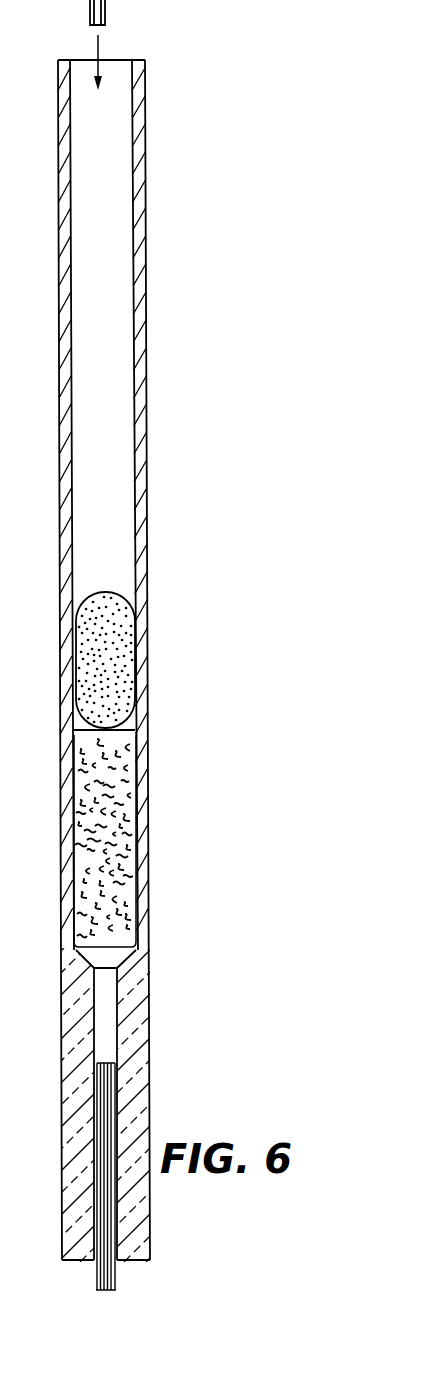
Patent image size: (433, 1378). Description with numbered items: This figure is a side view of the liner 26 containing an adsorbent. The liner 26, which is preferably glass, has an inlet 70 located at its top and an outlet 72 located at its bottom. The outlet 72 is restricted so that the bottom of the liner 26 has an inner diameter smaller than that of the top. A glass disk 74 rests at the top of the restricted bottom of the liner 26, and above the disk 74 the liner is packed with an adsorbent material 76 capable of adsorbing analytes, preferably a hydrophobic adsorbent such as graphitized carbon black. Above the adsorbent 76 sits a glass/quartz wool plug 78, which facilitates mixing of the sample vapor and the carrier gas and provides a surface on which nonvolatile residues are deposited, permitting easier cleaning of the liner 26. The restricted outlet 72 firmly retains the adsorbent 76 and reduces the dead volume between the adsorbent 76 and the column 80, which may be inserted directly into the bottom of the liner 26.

The inlet 70 is at (84, 70).
The liner 26 is at (60, 412).
The glass/quartz wool plug 78 is at (118, 670).
The adsorbent material 76 is at (110, 810).
The glass disk 74 is at (110, 958).
The outlet 72 is at (100, 1260).
The column 80 is at (117, 1275).